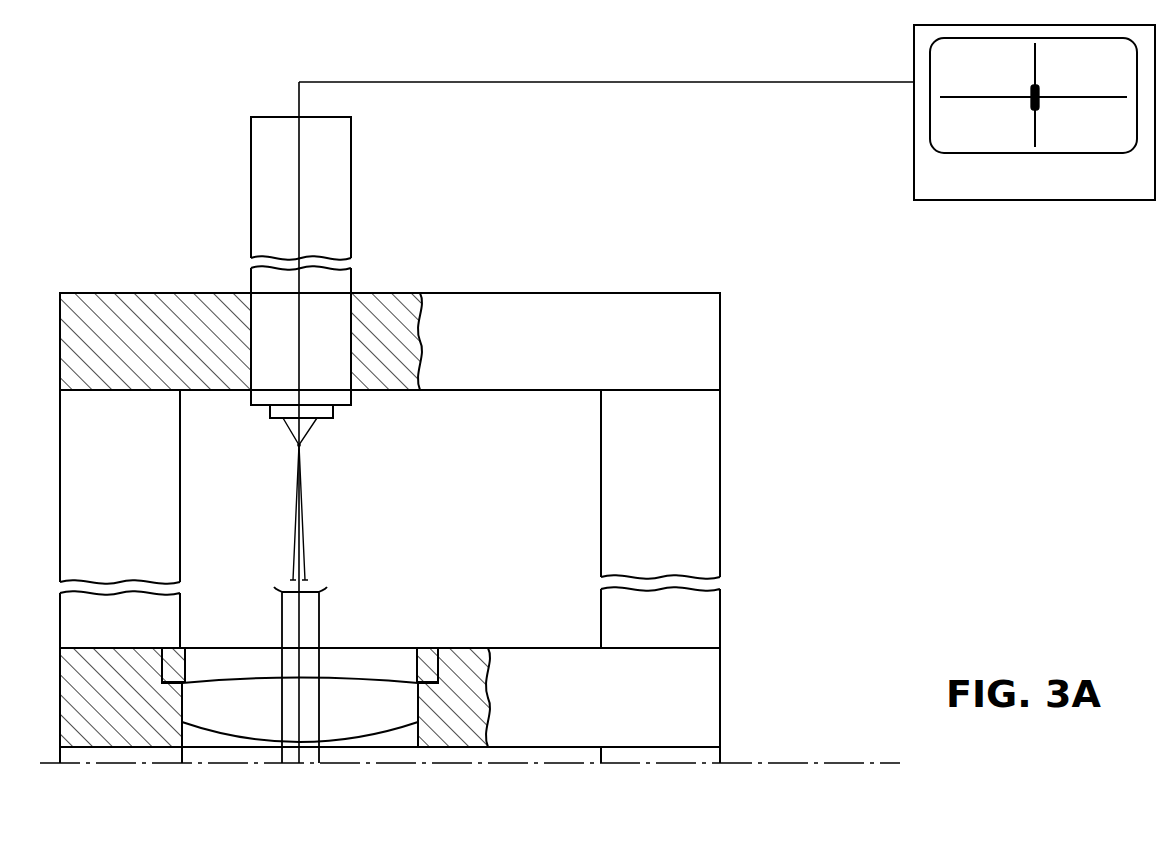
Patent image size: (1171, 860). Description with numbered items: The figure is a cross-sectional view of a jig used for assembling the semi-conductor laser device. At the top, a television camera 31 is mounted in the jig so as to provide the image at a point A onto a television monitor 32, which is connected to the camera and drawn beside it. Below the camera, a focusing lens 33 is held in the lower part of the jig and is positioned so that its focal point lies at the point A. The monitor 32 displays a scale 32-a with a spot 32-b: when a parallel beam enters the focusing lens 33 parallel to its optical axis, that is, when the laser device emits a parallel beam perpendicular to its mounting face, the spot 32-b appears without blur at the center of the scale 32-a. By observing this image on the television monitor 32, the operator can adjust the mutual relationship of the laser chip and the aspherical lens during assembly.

The television camera 31 is at (337, 287).
The television monitor 32 is at (914, 160).
The scale 32-a is at (1033, 125).
The spot 32-b is at (1038, 88).
The focusing lens 33 is at (373, 690).
The point A is at (299, 445).